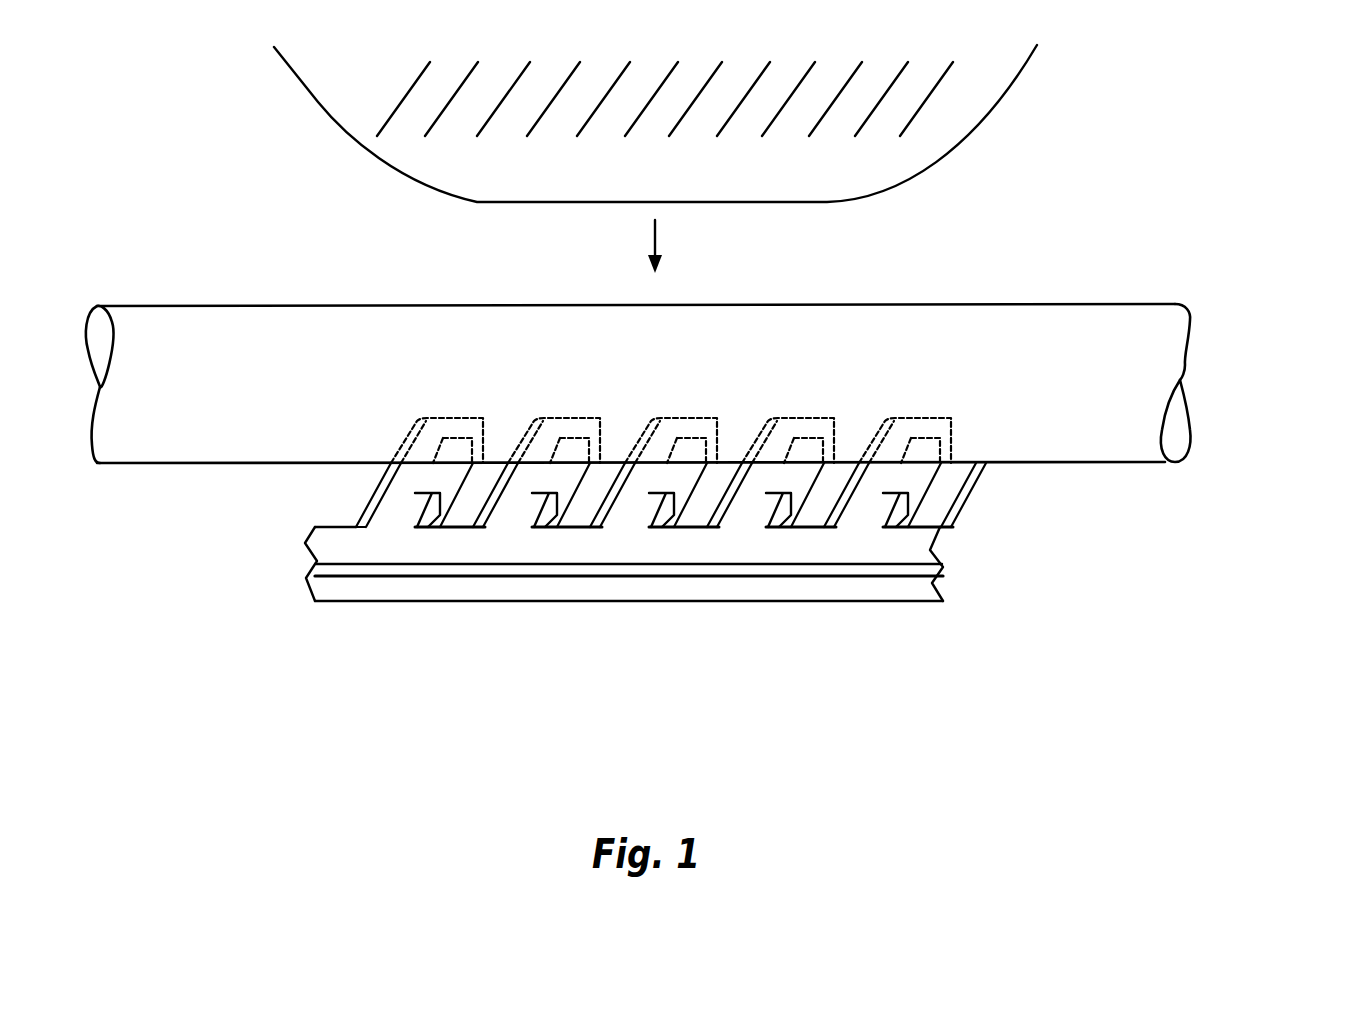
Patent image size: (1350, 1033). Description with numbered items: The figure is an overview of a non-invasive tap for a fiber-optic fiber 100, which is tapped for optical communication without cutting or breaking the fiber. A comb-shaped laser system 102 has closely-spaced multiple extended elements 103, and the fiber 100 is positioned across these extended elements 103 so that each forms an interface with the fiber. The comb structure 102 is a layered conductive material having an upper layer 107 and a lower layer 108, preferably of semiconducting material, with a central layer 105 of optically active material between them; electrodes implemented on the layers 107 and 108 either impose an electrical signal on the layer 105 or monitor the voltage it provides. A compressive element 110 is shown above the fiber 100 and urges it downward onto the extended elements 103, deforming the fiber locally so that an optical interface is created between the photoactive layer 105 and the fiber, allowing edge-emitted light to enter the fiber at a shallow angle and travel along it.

The fiber-optic fiber 100 is at (1157, 304).
The comb-shaped laser system 102 is at (457, 601).
The extended elements 103 is at (457, 418).
The central layer 105 is at (362, 578).
The upper layer 107 is at (310, 570).
The lower layer 108 is at (310, 594).
The compressive element 110 is at (318, 102).